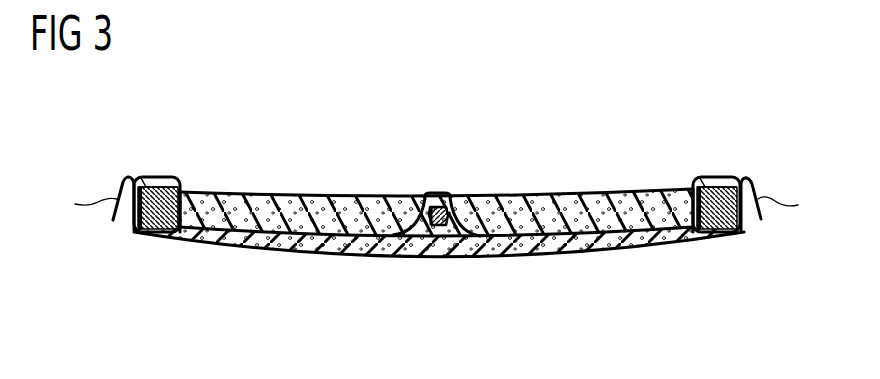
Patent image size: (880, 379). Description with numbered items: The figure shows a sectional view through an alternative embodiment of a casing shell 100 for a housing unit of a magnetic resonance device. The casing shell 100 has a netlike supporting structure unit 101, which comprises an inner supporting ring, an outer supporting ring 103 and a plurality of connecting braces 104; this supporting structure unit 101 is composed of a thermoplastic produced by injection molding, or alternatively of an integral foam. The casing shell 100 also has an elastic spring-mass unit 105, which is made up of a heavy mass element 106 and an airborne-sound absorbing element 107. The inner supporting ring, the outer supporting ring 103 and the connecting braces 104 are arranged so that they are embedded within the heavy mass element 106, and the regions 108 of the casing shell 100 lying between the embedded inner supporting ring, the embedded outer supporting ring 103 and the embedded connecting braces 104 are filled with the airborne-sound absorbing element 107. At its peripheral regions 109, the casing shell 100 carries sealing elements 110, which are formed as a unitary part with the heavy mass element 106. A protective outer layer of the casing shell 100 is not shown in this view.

The casing shell 100 is at (473, 166).
The netlike supporting structure unit 101 is at (712, 240).
The outer supporting ring 103 is at (139, 233).
The connecting braces 104 is at (428, 228).
The elastic spring-mass unit 105 is at (263, 260).
The heavy mass element 106 is at (323, 258).
The airborne-sound absorbing element 107 is at (340, 195).
The regions 108 is at (237, 188).
The peripheral regions 109 is at (121, 173).
The sealing elements 110 is at (436, 204).